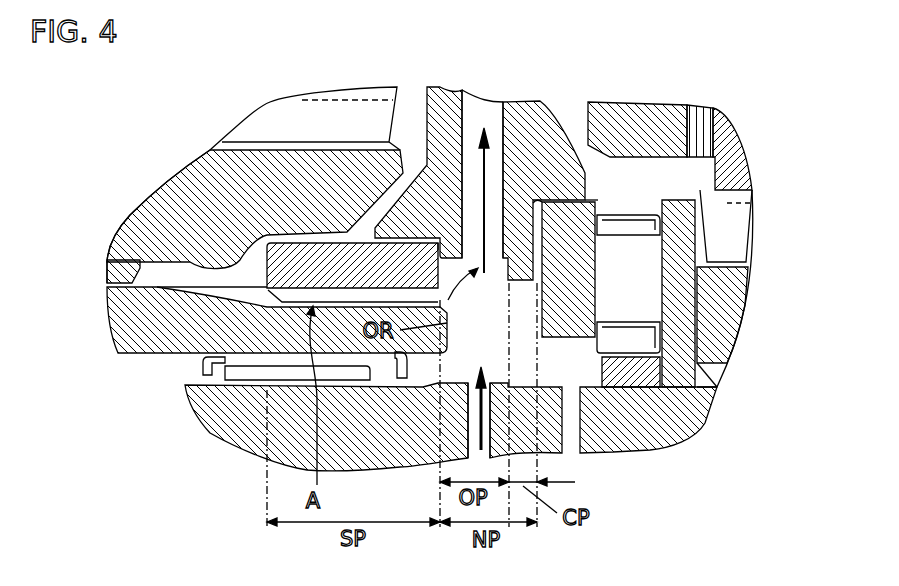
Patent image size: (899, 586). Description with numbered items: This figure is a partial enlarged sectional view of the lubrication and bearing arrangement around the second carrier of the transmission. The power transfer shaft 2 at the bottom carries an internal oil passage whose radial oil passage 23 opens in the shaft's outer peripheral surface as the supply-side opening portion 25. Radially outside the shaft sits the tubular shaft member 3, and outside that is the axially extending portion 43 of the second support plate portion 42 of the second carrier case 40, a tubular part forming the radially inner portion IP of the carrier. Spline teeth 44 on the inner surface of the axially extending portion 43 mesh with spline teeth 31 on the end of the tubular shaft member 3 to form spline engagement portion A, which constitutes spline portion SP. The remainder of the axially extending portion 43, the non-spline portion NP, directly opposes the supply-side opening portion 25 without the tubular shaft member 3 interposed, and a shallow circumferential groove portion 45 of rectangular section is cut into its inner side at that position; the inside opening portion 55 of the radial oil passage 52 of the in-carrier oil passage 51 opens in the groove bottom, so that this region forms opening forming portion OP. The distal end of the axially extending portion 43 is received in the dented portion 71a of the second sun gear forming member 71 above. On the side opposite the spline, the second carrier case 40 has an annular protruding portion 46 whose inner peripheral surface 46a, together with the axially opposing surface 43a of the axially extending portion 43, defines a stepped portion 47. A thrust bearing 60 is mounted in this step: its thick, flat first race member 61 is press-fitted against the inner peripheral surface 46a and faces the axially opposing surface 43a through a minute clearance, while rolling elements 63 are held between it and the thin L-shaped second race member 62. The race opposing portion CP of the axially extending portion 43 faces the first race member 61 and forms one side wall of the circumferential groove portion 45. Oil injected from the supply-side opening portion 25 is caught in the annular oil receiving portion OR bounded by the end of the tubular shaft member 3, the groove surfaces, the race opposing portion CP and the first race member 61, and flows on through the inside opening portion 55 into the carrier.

The power transfer shaft 2 is at (627, 443).
The tubular shaft member 3 is at (130, 335).
The radial oil passage 23 is at (422, 455).
The supply-side opening portion 25 is at (472, 394).
The spline teeth 31 is at (220, 297).
The second carrier case 40 is at (543, 103).
The second support plate portion 42 is at (425, 163).
The axially extending portion 43 is at (328, 250).
The axially opposing surface 43a is at (545, 262).
The spline teeth 44 is at (298, 282).
The circumferential groove portion 45 is at (450, 262).
The protruding portion 46 is at (583, 195).
The inner peripheral surface 46a is at (592, 232).
The stepped portion 47 is at (602, 235).
The in-carrier oil passage 51 is at (484, 200).
The radial oil passage 52 is at (477, 113).
The inside opening portion 55 is at (394, 137).
The thrust bearing 60 is at (697, 372).
The first race member 61 is at (572, 327).
The second race member 62 is at (690, 238).
The rolling elements 63 is at (640, 287).
The second sun gear forming member 71 is at (177, 176).
The dented portion 71a is at (140, 244).